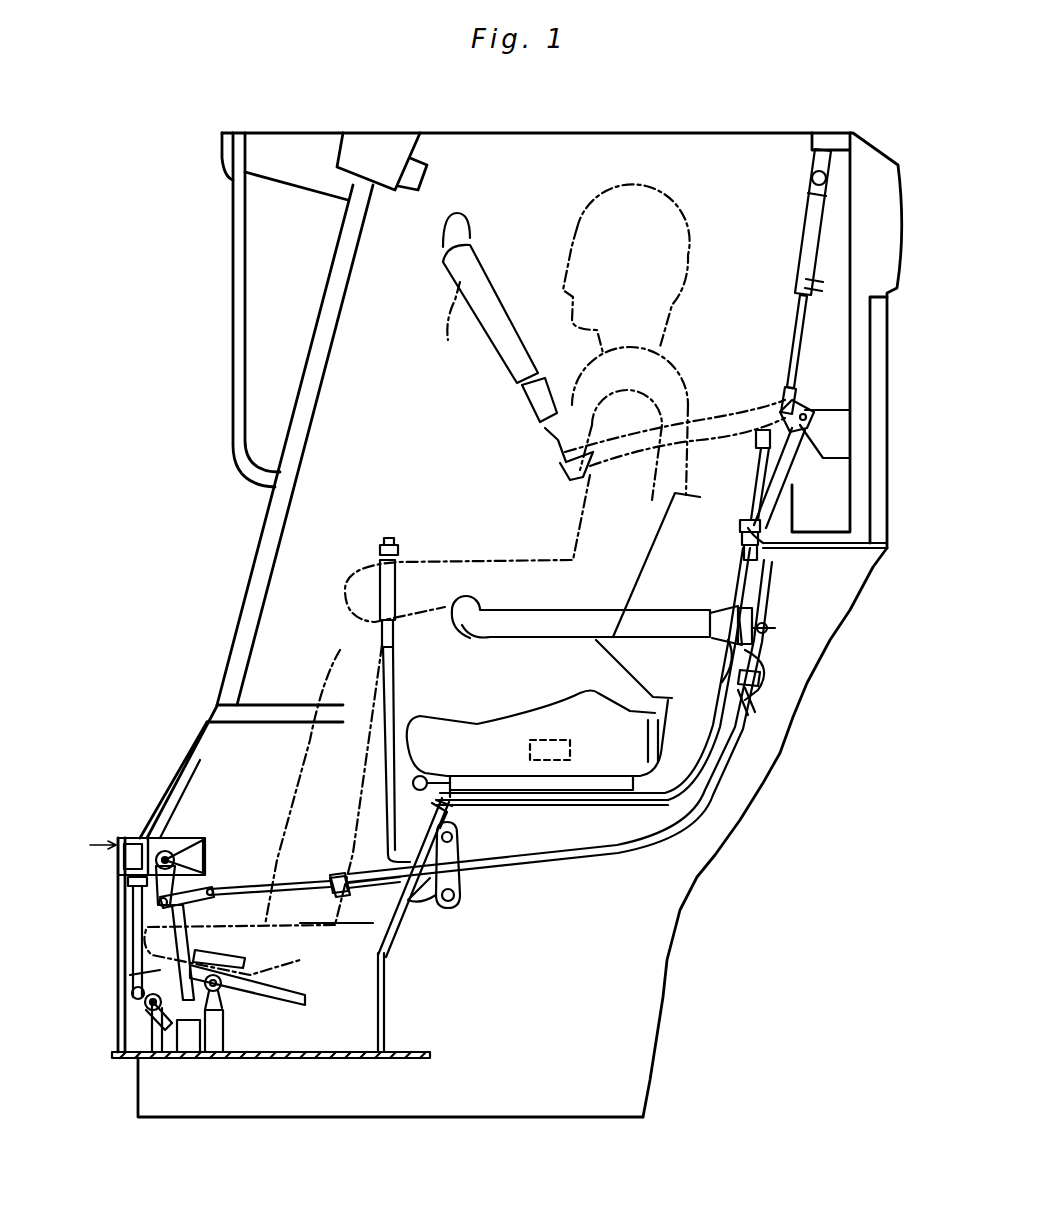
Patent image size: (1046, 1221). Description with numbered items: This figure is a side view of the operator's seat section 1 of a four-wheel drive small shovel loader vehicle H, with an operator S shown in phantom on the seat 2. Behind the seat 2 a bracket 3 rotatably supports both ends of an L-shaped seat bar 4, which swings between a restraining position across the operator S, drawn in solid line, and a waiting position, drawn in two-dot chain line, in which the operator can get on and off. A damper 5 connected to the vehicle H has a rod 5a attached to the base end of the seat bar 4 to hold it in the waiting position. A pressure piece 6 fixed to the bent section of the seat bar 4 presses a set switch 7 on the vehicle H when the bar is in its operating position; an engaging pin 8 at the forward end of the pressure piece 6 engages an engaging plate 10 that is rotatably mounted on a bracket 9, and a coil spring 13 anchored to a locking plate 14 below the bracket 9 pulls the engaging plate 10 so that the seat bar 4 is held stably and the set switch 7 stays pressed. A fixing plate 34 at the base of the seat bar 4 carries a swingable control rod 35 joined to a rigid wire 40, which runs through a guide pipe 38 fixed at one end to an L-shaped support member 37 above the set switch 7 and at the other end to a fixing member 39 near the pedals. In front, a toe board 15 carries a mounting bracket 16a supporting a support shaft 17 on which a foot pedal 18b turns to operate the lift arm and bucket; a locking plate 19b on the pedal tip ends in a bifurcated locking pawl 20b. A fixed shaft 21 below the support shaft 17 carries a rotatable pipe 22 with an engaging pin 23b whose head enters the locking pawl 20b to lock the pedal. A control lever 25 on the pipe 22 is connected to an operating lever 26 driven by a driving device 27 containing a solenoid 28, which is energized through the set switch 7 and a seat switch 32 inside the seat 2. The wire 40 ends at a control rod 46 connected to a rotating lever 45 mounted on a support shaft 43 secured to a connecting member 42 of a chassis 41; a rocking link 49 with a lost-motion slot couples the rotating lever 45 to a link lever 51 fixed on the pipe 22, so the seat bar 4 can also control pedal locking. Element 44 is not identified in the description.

The operator's seat section 1 is at (510, 602).
The vehicle H is at (775, 140).
The operator S is at (416, 579).
The seat 2 is at (553, 649).
The bracket 3 is at (825, 456).
The seat bar 4 is at (575, 425).
The damper 5 is at (795, 222).
The rod 5a is at (780, 354).
The pressure piece 6 is at (707, 610).
The set switch 7 is at (564, 795).
The engaging pin 8 is at (733, 680).
The bracket 9 is at (770, 638).
The engaging plate 10 is at (703, 661).
The coil spring 13 is at (767, 686).
The locking plate 14 is at (756, 711).
The toe board 15 is at (271, 1011).
The mounting bracket 16a is at (251, 1031).
The support shaft 17 is at (233, 1003).
The foot pedal 18b is at (269, 998).
The locking plate 19b is at (107, 967).
The locking pawl 20b is at (206, 1057).
The fixed shaft 21 is at (115, 1028).
The pipe 22 is at (101, 992).
The engaging pin 23b is at (243, 962).
The control lever 25 is at (109, 1011).
The operating lever 26 is at (98, 941).
The driving device 27 is at (95, 845).
The solenoid 28 is at (128, 823).
The seat switch 32 is at (575, 748).
The fixing plate 34 is at (785, 464).
The control rod 35 is at (675, 460).
The support member 37 is at (817, 557).
The guide pipe 38 is at (560, 735).
The fixing member 39 is at (331, 854).
The wire 40 is at (485, 697).
The chassis 41 is at (212, 855).
The connecting member 42 is at (214, 851).
The support shaft 43 is at (191, 840).
The guide 44 is at (191, 799).
The rotating lever 45 is at (101, 877).
The control rod 46 is at (217, 885).
The rocking link 49 is at (200, 952).
The link lever 51 is at (154, 1050).